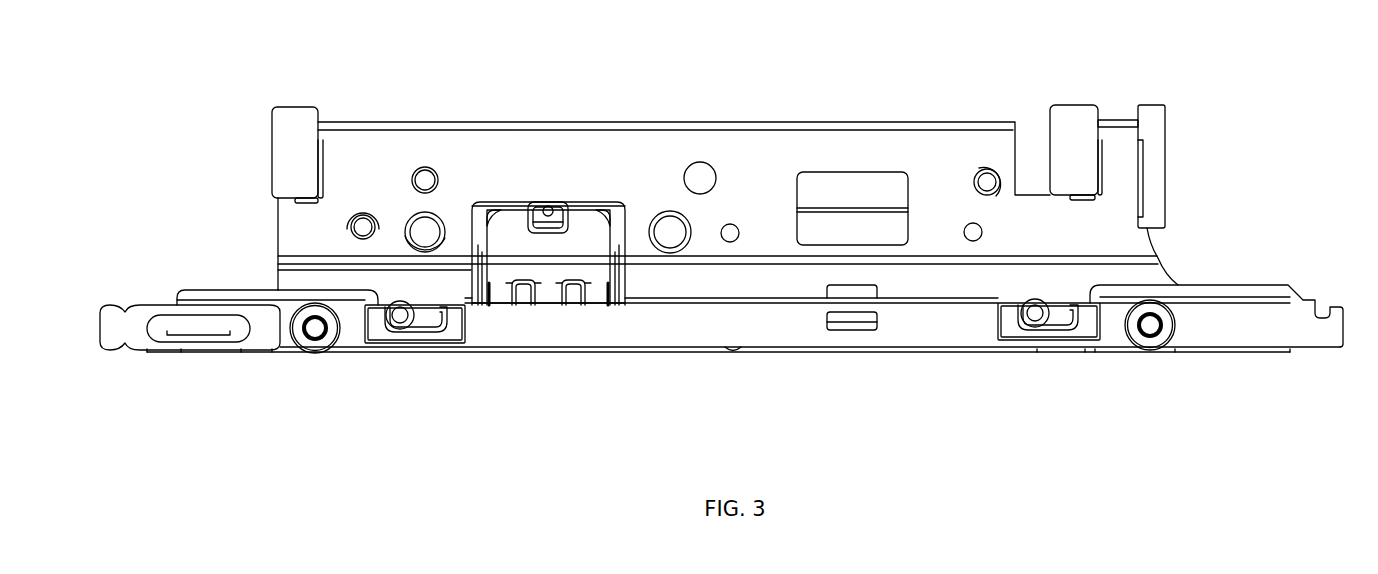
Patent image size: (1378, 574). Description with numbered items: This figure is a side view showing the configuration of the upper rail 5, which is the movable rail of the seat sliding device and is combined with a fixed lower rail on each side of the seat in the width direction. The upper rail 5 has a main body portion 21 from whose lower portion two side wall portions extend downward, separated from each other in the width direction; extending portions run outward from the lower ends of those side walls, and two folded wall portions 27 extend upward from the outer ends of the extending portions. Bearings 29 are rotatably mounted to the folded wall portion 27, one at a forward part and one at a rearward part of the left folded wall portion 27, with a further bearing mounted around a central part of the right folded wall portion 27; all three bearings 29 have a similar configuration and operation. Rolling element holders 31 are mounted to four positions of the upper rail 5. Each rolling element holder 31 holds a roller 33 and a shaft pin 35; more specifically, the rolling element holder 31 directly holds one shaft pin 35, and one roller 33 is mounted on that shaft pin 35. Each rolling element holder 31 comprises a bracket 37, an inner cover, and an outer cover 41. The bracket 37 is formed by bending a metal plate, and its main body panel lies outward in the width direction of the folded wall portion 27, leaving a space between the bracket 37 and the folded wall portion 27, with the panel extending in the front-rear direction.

The upper rail 5 is at (1322, 143).
The main body portion 21 is at (872, 145).
The folded wall portion 27 is at (597, 333).
The bearing 29 is at (322, 343).
The rolling element holder 31 is at (458, 327).
The roller 33 is at (430, 323).
The shaft pin 35 is at (390, 318).
The bracket 37 is at (375, 313).
The outer cover 41 is at (443, 323).